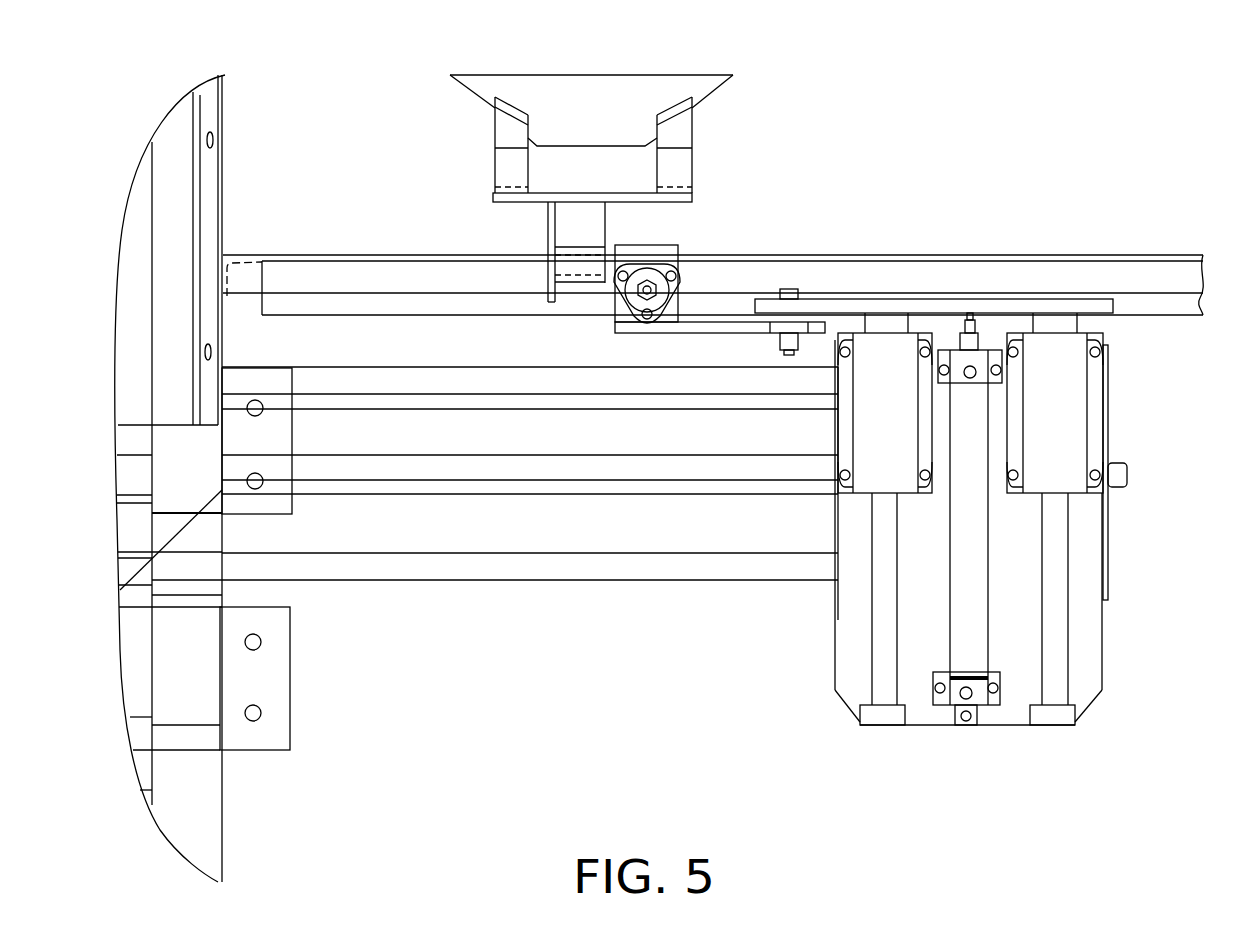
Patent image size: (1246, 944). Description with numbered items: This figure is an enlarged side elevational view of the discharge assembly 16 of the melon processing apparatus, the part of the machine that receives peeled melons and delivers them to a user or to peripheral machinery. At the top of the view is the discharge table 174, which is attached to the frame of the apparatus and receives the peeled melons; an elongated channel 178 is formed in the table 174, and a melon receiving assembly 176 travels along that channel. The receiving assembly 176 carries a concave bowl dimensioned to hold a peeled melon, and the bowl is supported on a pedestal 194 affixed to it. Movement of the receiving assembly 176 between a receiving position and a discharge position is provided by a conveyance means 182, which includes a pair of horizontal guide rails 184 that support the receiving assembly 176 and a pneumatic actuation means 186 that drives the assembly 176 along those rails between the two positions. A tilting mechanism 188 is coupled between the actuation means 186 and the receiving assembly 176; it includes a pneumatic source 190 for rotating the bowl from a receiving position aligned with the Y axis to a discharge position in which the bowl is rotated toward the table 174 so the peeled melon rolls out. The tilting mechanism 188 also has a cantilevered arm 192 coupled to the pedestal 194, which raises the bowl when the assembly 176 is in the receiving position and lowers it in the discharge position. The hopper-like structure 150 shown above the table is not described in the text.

The discharge assembly 16 is at (762, 150).
The hopper 150 is at (565, 92).
The discharge table 174 is at (981, 237).
The melon receiving assembly 176 is at (530, 219).
The elongated channel 178 is at (491, 248).
The conveyance means 182 is at (834, 532).
The horizontal guide rails 184 is at (450, 573).
The pneumatic actuation means 186 is at (977, 570).
The tilting mechanism 188 is at (787, 213).
The pneumatic source 190 is at (672, 280).
The cantilevered arm 192 is at (617, 247).
The pedestal 194 is at (573, 227).